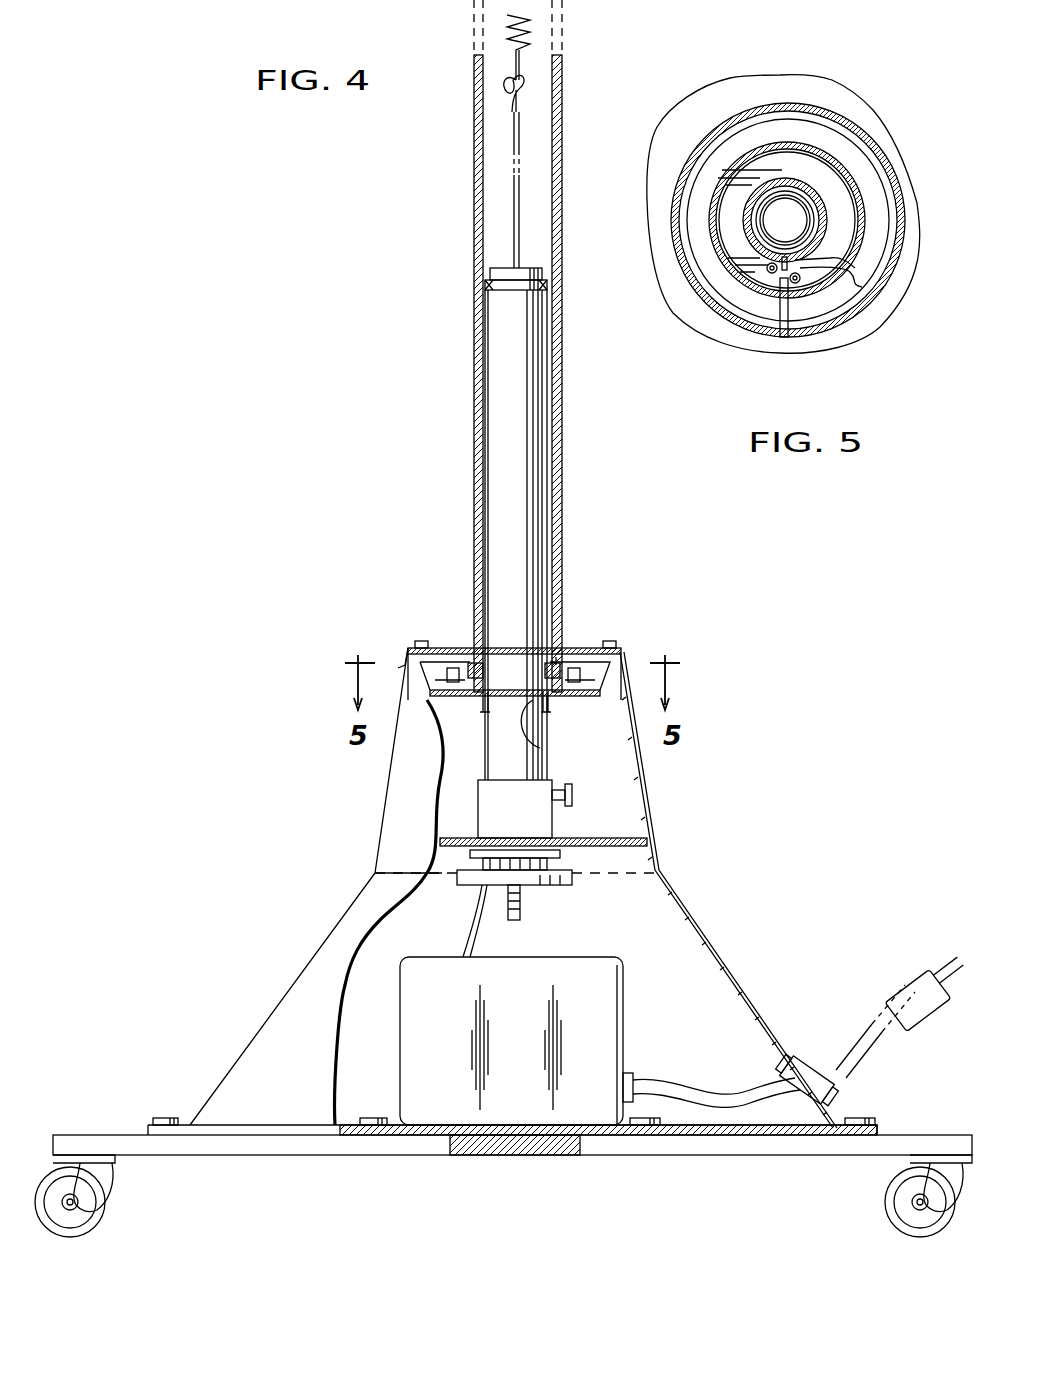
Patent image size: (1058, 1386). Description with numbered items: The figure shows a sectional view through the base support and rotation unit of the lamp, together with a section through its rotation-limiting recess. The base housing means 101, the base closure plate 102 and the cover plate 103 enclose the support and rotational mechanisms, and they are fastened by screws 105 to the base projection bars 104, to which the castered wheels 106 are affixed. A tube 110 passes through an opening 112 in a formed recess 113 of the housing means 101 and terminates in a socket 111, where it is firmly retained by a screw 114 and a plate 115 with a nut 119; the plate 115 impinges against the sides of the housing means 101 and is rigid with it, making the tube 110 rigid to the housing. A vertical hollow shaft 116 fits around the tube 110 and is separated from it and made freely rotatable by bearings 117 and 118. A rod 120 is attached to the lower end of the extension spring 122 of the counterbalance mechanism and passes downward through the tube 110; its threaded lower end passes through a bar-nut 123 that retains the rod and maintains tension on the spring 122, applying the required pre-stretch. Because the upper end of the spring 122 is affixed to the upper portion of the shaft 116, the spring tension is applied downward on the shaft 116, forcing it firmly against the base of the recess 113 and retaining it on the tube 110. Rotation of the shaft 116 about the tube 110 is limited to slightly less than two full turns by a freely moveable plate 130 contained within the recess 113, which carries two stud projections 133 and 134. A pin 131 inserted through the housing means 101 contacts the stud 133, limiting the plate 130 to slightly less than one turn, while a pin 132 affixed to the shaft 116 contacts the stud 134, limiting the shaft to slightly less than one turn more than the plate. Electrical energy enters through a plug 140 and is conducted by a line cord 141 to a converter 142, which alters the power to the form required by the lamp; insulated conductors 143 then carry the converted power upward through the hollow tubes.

In FIG. 4, the base housing means 101 is at (748, 990).
In FIG. 5, the base housing means 101 is at (652, 192).
In FIG. 4, the base closure plate 102 is at (280, 1140).
In FIG. 4, the cover plate 103 is at (458, 648).
In FIG. 4, the base projection bars 104 is at (450, 1155).
In FIG. 4, the screws 105 is at (172, 1118).
In FIG. 4, the castered wheels 106 is at (105, 1214).
In FIG. 4, the tube 110 is at (520, 775).
In FIG. 5, the tube 110 is at (760, 265).
In FIG. 4, the socket 111 is at (520, 835).
In FIG. 4, the opening 112 is at (540, 748).
In FIG. 4, the formed recess 113 is at (420, 730).
In FIG. 5, the formed recess 113 is at (815, 174).
In FIG. 4, the screw 114 is at (572, 797).
In FIG. 4, the plate 115 is at (647, 843).
In FIG. 4, the vertical hollow shaft 116 is at (474, 428).
In FIG. 5, the vertical hollow shaft 116 is at (752, 222).
In FIG. 4, the bearing 117 is at (556, 660).
In FIG. 4, the bearing 118 is at (485, 288).
In FIG. 4, the nut 119 is at (560, 856).
In FIG. 4, the rod 120 is at (514, 243).
In FIG. 4, the extension spring 122 is at (523, 50).
In FIG. 4, the bar-nut 123 is at (572, 885).
In FIG. 4, the freely moveable plate 130 is at (548, 712).
In FIG. 5, the freely moveable plate 130 is at (833, 185).
In FIG. 4, the pin 131 is at (404, 664).
In FIG. 5, the pin 131 is at (784, 337).
In FIG. 5, the pin 132 is at (862, 287).
In FIG. 4, the stud projection 133 is at (452, 668).
In FIG. 5, the stud projection 133 is at (798, 285).
In FIG. 4, the stud projection 134 is at (580, 665).
In FIG. 5, the stud projection 134 is at (769, 274).
In FIG. 4, the plug 140 is at (909, 985).
In FIG. 4, the line cord 141 is at (826, 1058).
In FIG. 4, the converter 142 is at (523, 1010).
In FIG. 4, the insulated conductors 143 is at (480, 940).